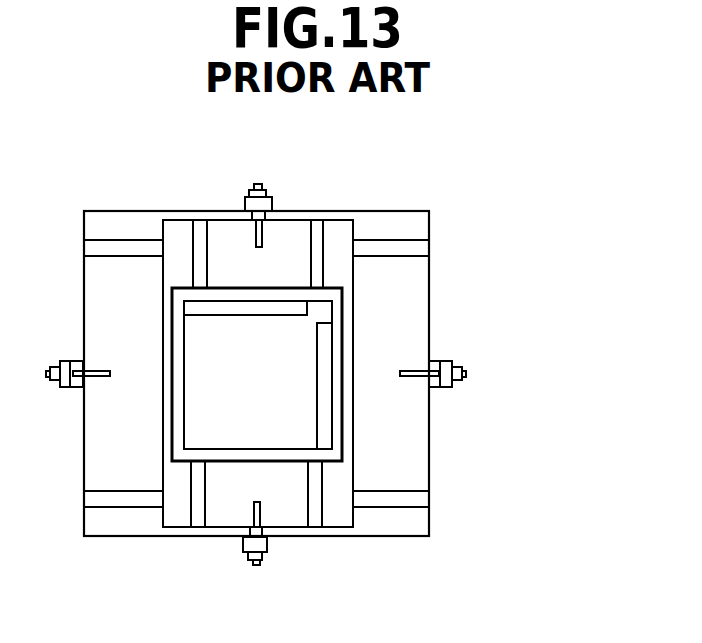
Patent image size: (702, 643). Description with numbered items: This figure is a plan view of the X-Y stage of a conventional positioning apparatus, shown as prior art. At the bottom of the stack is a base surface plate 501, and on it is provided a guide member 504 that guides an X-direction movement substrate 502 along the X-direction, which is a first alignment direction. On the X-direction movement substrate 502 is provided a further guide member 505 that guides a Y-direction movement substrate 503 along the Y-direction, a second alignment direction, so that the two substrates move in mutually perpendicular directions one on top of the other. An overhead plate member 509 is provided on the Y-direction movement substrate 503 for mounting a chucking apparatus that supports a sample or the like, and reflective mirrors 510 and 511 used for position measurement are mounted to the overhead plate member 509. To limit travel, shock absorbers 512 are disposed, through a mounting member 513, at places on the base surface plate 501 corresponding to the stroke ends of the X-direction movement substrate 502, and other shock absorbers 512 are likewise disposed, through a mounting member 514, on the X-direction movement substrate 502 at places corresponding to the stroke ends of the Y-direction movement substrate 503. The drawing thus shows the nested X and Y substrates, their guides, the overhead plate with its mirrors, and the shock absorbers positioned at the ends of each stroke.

The base surface plate 501 is at (408, 228).
The X-direction movement substrate 502 is at (296, 215).
The Y-direction movement substrate 503 is at (310, 413).
The guide member 504 is at (418, 252).
The guide member 505 is at (198, 494).
The overhead plate member 509 is at (247, 427).
The reflective mirror 510 is at (323, 385).
The reflective mirror 511 is at (224, 307).
The shock absorber 512 is at (467, 376).
The mounting member 513 is at (448, 362).
The mounting member 514 is at (246, 544).